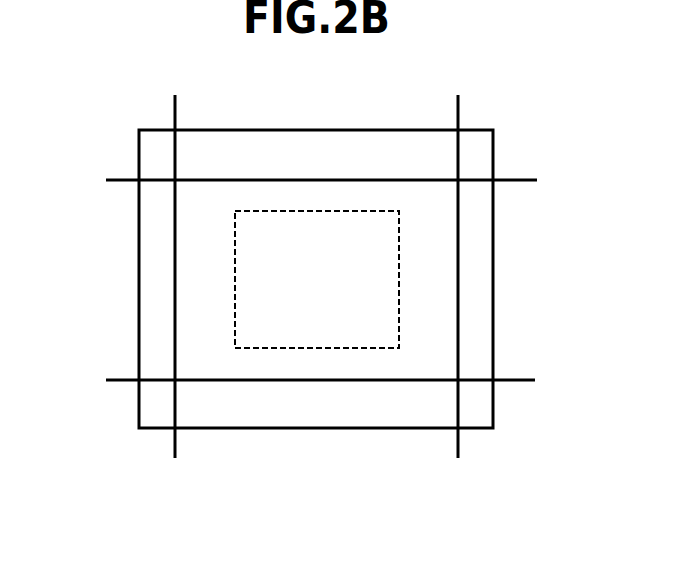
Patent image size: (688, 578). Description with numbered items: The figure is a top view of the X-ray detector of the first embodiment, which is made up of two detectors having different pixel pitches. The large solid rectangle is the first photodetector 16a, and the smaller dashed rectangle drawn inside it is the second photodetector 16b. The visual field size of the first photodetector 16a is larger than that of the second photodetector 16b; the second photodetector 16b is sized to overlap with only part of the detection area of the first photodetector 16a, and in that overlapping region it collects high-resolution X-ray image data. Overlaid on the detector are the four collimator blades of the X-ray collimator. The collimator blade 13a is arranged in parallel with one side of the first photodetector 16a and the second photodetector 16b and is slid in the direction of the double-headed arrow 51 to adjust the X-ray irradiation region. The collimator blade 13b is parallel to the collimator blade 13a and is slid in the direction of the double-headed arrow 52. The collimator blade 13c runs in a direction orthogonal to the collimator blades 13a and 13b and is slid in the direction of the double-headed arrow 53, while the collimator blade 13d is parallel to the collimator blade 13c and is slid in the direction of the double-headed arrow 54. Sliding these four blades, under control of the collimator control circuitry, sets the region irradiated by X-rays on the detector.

The collimator blade 13a is at (459, 102).
The collimator blade 13b is at (176, 102).
The collimator blade 13c is at (520, 183).
The collimator blade 13d is at (521, 379).
The first photodetector 16a is at (494, 147).
The second photodetector 16b is at (372, 211).
The double-headed arrow 51 is at (476, 468).
The double-headed arrow 52 is at (194, 468).
The double-headed arrow 53 is at (96, 166).
The double-headed arrow 54 is at (96, 366).